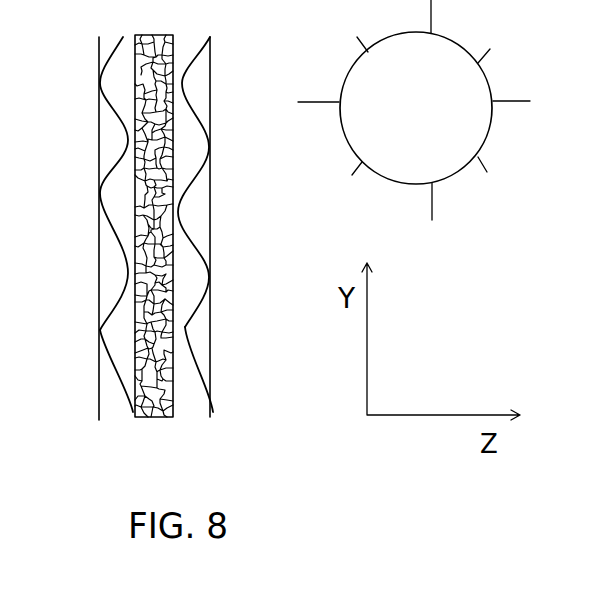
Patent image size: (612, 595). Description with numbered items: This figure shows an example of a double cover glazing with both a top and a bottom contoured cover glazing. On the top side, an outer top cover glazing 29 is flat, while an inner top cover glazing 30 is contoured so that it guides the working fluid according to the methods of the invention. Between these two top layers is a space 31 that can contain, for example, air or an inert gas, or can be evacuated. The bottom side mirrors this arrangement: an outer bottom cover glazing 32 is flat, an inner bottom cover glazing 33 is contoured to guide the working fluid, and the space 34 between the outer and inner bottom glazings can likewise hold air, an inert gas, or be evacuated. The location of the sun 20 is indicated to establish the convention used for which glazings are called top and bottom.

The location of the sun 20 is at (345, 63).
The outer top cover glazing 29 is at (221, 227).
The inner top cover glazing 30 is at (190, 214).
The space between the outer and inner top cover glazings 31 is at (201, 335).
The outer bottom cover glazing 32 is at (90, 318).
The inner bottom cover glazing 33 is at (114, 280).
The space between the outer and inner bottom cover glazings 34 is at (111, 405).